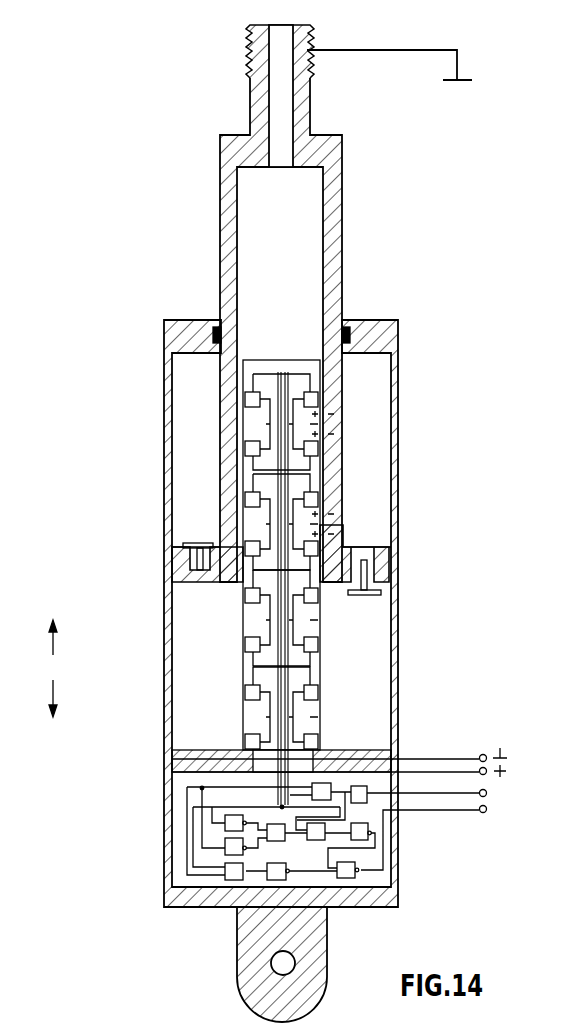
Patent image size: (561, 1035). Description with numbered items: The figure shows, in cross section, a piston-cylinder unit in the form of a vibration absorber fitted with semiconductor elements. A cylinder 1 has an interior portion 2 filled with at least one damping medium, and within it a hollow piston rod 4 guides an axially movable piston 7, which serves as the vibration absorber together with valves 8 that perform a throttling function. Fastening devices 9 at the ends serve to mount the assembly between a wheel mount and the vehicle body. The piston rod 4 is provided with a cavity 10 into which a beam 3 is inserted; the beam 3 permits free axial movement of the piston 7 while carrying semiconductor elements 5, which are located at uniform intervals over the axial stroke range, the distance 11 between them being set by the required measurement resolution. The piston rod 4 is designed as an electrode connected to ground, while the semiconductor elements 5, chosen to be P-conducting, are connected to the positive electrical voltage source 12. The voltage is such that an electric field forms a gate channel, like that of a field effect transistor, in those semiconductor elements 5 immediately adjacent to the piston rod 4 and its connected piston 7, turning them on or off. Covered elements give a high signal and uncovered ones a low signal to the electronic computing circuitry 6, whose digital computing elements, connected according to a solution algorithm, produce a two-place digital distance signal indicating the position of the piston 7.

The cylinder 1 is at (378, 334).
The interior portion 2 is at (372, 370).
The beam 3 is at (318, 475).
The piston rod 4 is at (335, 498).
The semiconductor elements 5 is at (318, 422).
The electronic computing circuitry 6 is at (380, 878).
The piston 7 is at (380, 562).
The valves 8 is at (183, 545).
The fastening devices 9 is at (306, 40).
The cavity 10 is at (305, 185).
The distance 11 is at (58, 668).
The electrical voltage source 12 is at (500, 775).